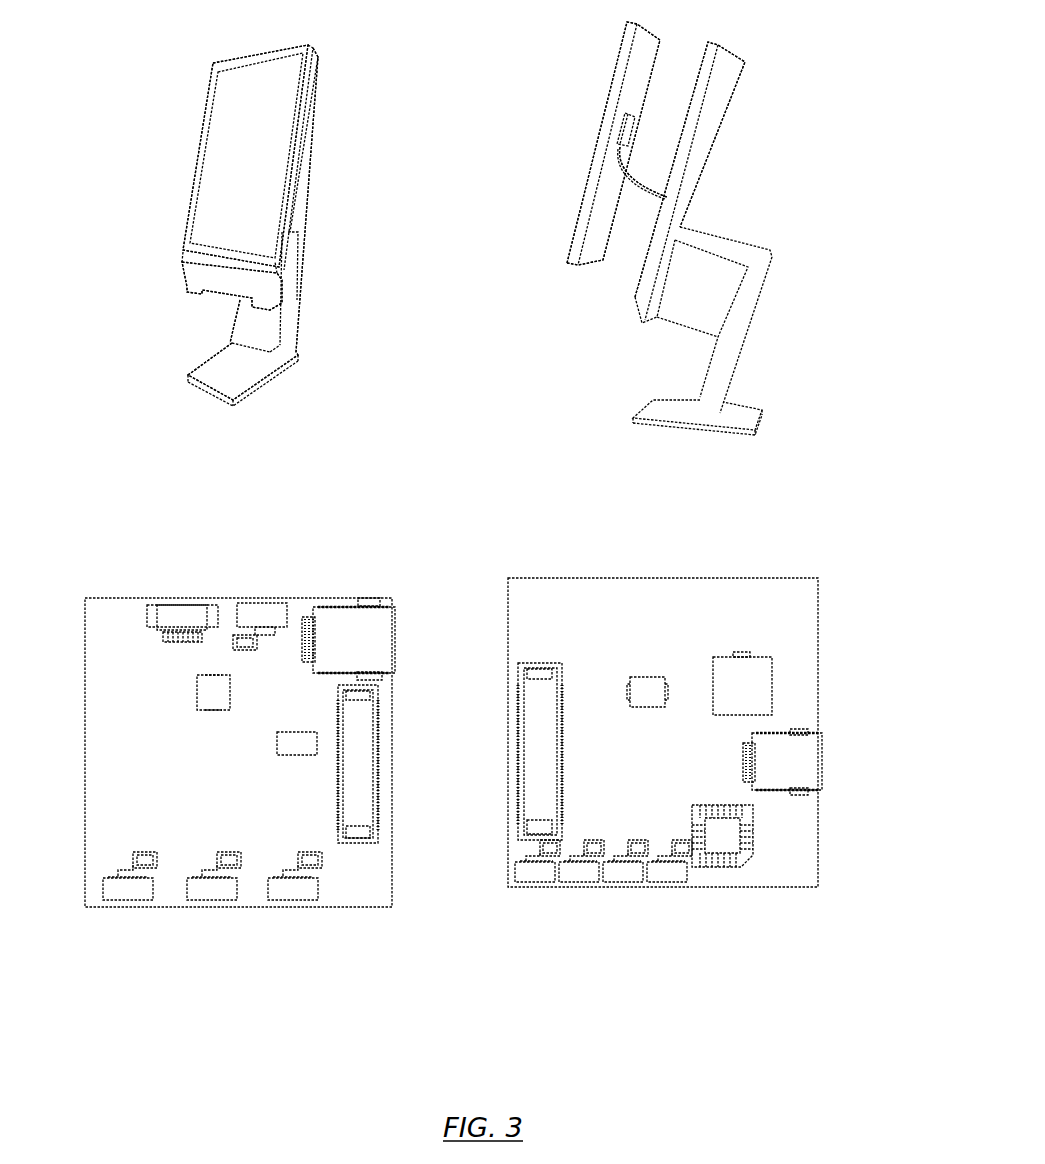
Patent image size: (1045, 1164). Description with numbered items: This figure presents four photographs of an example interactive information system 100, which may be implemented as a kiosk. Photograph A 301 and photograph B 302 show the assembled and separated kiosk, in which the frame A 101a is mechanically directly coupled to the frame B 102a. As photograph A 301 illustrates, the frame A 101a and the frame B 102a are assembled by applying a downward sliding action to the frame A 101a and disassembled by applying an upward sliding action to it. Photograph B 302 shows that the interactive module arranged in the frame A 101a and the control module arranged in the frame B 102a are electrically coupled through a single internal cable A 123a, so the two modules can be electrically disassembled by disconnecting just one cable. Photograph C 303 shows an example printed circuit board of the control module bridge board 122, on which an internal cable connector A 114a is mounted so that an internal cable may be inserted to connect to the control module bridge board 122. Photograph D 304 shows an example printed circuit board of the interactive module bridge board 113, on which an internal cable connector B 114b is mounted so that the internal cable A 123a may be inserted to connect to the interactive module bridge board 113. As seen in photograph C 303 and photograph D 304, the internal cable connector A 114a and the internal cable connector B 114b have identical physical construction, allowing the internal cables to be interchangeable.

The interactive information system 100 is at (300, 275).
The frame A 101a is at (208, 80).
The frame B 102a is at (783, 58).
The internal cable A 123a is at (650, 184).
The photograph A 301 is at (200, 403).
The photograph B 302 is at (607, 432).
The photograph C 303 is at (278, 773).
The photograph D 304 is at (717, 776).
The internal cable connector A 114a is at (357, 557).
The internal cable connector B 114b is at (782, 733).
The control module bridge board 122 is at (294, 738).
The interactive module bridge board 113 is at (728, 733).